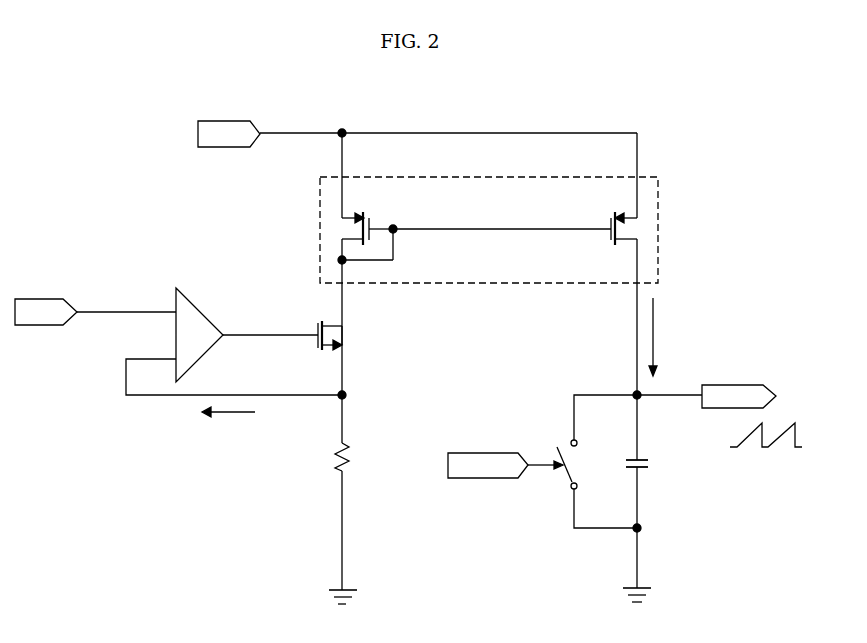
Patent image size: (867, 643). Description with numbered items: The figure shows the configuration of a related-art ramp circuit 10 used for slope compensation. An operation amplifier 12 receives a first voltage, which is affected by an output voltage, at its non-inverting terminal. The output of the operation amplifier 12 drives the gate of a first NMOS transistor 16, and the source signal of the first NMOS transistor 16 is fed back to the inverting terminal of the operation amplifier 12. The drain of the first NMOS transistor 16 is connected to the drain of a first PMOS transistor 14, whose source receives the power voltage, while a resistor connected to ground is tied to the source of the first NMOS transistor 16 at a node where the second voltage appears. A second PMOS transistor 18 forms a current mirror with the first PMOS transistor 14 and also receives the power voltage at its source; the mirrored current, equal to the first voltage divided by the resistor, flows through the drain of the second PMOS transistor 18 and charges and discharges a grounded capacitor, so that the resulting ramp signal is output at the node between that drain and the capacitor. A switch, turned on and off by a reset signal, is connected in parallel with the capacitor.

The ramp circuit 10 is at (122, 120).
The operation amplifier 12 is at (201, 311).
The first PMOS transistor 14 is at (360, 217).
The first NMOS transistor 16 is at (316, 328).
The second PMOS transistor 18 is at (608, 218).